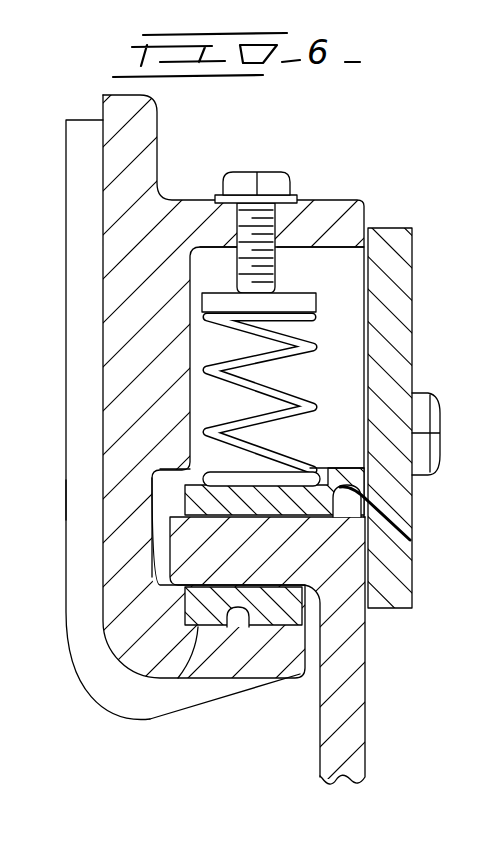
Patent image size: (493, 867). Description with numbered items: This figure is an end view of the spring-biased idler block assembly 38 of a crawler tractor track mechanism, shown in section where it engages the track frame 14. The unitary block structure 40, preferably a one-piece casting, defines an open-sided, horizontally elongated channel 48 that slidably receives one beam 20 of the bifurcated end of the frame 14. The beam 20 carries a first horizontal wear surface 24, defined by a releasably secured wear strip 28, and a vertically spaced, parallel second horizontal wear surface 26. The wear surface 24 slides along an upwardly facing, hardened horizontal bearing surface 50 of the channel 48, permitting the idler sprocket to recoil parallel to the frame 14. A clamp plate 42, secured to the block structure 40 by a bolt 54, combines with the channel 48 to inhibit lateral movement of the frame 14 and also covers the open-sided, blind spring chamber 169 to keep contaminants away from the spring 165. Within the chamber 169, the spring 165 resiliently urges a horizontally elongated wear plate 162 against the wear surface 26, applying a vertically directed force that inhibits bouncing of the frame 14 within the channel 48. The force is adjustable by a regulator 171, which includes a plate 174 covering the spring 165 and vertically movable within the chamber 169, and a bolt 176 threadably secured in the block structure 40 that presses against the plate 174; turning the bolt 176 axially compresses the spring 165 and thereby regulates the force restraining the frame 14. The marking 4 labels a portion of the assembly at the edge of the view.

The seal assembly 4 is at (34, 500).
The track frame 14 is at (368, 756).
The beam 20 is at (333, 750).
The first horizontal wear surface 24 is at (140, 718).
The second horizontal wear surface 26 is at (408, 542).
The wear strip 28 is at (203, 607).
The block assembly 38 is at (93, 100).
The unitary block structure 40 is at (142, 128).
The clamp plate 42 is at (403, 250).
The channel 48 is at (160, 598).
The horizontal bearing surface 50 is at (247, 630).
The bolt 54 is at (425, 399).
The wear plate 162 is at (322, 484).
The spring 165 is at (203, 372).
The spring chamber 169 is at (324, 254).
The regulator 171 is at (272, 169).
The plate 174 is at (205, 302).
The bolt 176 is at (235, 186).